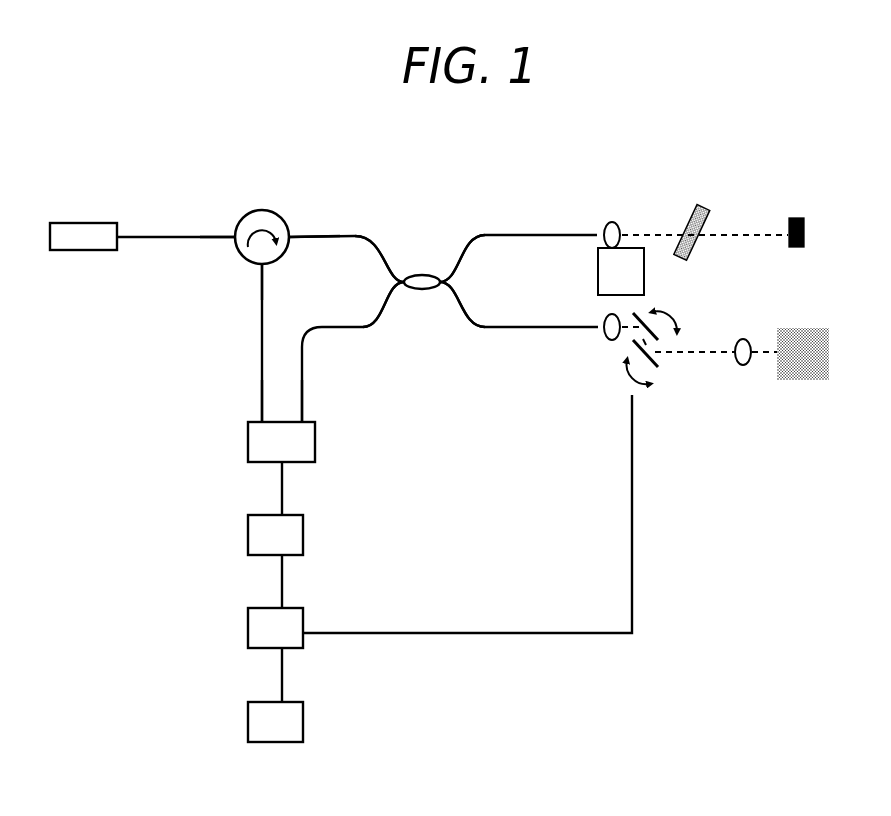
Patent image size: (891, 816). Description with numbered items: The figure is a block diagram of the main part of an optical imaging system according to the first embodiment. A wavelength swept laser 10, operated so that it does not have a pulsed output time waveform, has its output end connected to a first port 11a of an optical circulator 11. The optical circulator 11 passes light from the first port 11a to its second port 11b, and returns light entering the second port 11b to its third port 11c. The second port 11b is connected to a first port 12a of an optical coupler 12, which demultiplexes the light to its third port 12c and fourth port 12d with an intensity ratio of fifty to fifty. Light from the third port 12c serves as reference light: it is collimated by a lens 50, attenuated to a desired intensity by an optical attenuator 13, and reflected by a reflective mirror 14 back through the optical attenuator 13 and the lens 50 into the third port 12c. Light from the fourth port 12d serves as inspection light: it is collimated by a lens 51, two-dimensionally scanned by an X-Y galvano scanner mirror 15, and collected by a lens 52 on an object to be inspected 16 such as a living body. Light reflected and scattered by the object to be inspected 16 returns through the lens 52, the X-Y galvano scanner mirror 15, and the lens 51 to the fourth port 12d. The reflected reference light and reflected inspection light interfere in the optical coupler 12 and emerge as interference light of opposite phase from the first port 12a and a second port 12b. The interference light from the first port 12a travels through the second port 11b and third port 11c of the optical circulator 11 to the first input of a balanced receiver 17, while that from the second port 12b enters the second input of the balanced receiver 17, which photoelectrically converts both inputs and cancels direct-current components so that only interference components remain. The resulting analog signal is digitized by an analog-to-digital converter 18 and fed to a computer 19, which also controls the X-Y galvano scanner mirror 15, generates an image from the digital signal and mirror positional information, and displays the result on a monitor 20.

The wavelength swept laser 10 is at (91, 190).
The optical circulator 11 is at (276, 197).
The first port 11a is at (217, 224).
The second port 11b is at (314, 224).
The third port 11c is at (279, 282).
The optical coupler 12 is at (476, 241).
The first port 12a is at (379, 252).
The second port 12b is at (383, 314).
The third port 12c is at (462, 252).
The fourth port 12d is at (462, 314).
The optical attenuator 13 is at (702, 186).
The reflective mirror 14 is at (811, 186).
The X-Y galvano scanner mirror 15 is at (619, 388).
The object to be inspected 16 is at (819, 313).
The balanced receiver 17 is at (233, 435).
The analog-to-digital converter 18 is at (227, 526).
The computer 19 is at (227, 620).
The monitor 20 is at (227, 714).
The lens 50 is at (623, 210).
The lens 51 is at (577, 355).
The lens 52 is at (728, 402).